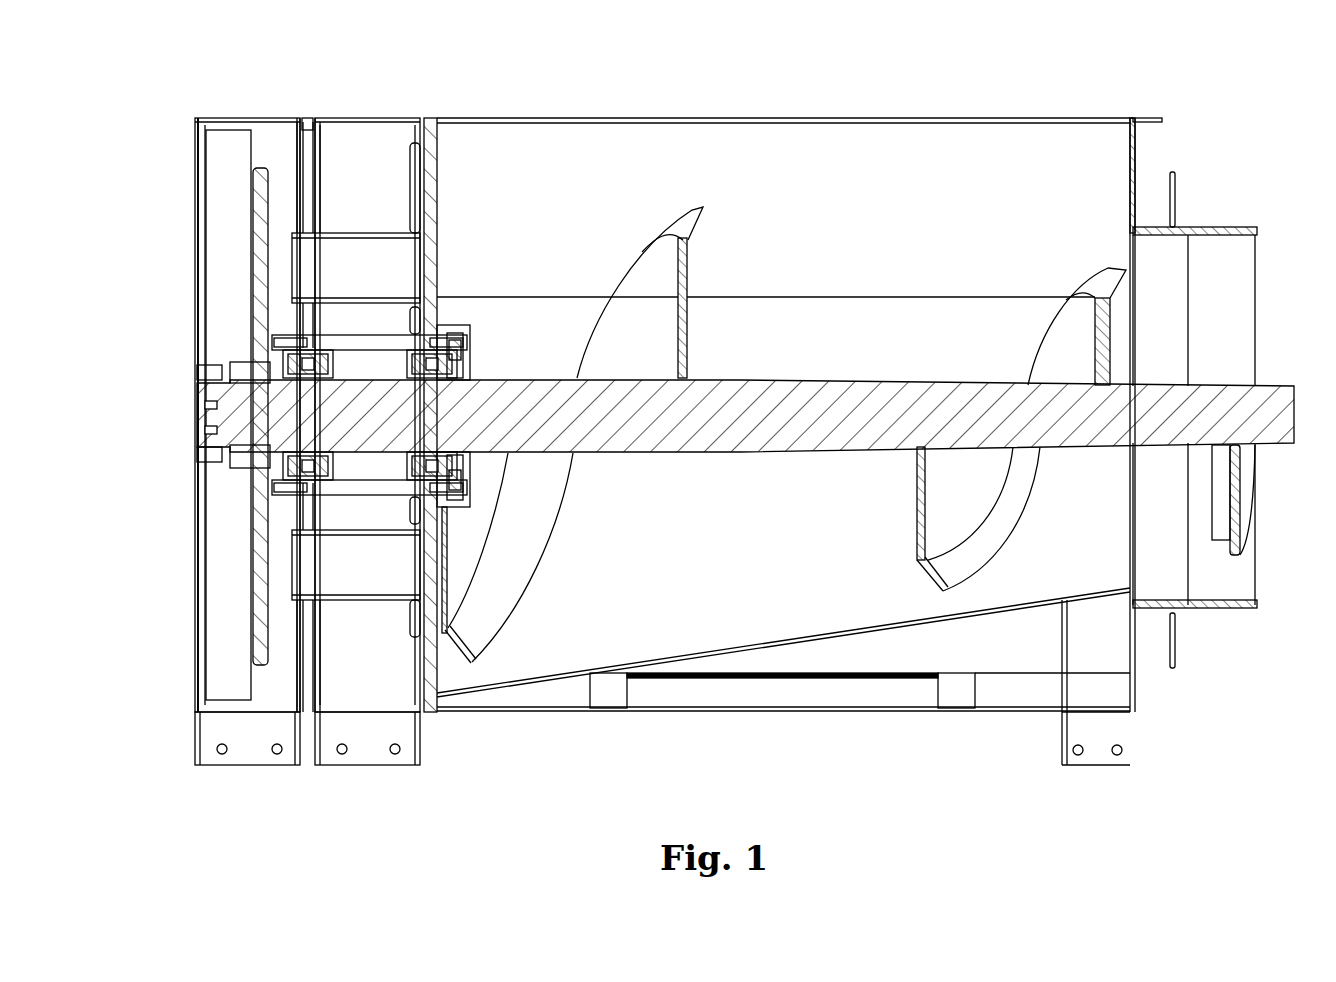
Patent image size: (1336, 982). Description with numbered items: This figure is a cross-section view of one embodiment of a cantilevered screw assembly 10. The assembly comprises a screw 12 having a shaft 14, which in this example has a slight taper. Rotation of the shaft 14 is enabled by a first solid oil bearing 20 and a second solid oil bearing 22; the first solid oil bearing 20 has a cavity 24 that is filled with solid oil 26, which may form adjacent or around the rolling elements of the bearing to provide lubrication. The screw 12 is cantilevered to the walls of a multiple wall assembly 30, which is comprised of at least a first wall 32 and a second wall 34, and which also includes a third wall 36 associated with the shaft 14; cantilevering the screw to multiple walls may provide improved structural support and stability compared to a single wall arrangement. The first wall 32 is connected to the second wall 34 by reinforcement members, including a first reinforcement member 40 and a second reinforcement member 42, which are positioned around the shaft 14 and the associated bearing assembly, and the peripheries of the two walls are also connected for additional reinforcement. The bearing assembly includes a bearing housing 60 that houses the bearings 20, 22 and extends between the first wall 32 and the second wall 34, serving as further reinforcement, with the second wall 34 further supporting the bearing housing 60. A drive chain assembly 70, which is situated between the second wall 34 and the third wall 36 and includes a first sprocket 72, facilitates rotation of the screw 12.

The cantilevered screw assembly 10 is at (841, 99).
The screw 12 is at (684, 200).
The shaft 14 is at (720, 378).
The first solid oil bearing 20 is at (444, 328).
The second solid oil bearing 22 is at (282, 350).
The cavity 24 is at (214, 405).
The solid oil 26 is at (224, 429).
The multiple wall assembly 30 is at (343, 113).
The first wall 32 is at (433, 163).
The second wall 34 is at (308, 117).
The third wall 36 is at (197, 320).
The first reinforcement member 40 is at (375, 232).
The second reinforcement member 42 is at (365, 598).
The bearing housing 60 is at (365, 495).
The drive chain assembly 70 is at (244, 267).
The first sprocket 72 is at (252, 178).